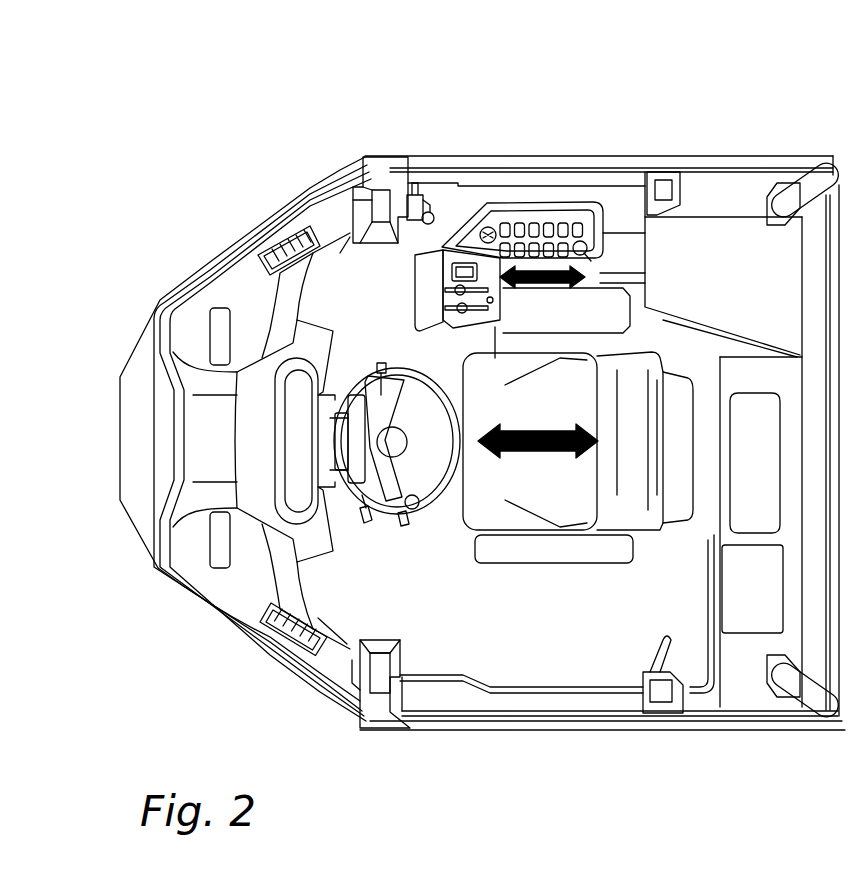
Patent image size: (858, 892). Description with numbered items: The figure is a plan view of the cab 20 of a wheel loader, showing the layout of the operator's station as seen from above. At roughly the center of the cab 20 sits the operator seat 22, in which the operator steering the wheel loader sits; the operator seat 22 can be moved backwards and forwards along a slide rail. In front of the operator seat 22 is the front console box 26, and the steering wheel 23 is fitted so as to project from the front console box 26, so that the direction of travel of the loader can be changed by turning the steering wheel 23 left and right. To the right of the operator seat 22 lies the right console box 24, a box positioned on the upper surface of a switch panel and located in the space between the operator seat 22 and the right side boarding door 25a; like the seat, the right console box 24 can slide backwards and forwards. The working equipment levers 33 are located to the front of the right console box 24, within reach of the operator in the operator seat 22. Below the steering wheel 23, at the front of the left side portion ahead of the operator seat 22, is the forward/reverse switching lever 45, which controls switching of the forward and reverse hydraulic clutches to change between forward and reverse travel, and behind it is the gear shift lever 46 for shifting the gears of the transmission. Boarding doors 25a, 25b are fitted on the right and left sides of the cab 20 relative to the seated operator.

The cab 20 is at (150, 122).
The operator seat 22 is at (537, 545).
The steering wheel 23 is at (395, 370).
The right console box 24 is at (550, 197).
The boarding door 25a is at (472, 158).
The boarding door 25b is at (470, 720).
The front console box 26 is at (332, 576).
The working equipment levers 33 is at (454, 313).
The forward/reverse switching lever 45 is at (365, 514).
The gear shift lever 46 is at (405, 524).